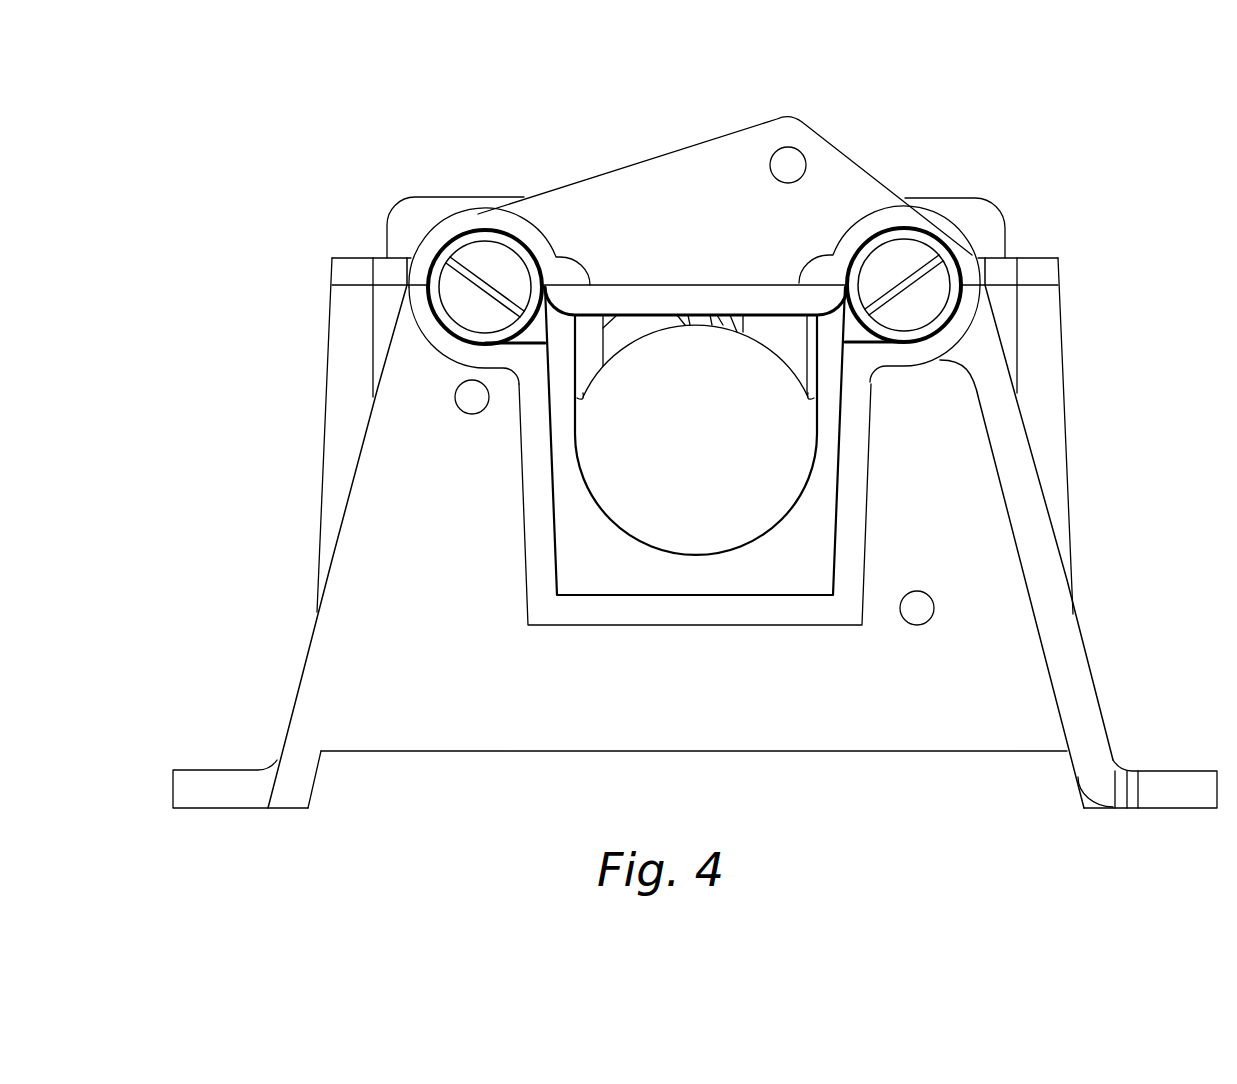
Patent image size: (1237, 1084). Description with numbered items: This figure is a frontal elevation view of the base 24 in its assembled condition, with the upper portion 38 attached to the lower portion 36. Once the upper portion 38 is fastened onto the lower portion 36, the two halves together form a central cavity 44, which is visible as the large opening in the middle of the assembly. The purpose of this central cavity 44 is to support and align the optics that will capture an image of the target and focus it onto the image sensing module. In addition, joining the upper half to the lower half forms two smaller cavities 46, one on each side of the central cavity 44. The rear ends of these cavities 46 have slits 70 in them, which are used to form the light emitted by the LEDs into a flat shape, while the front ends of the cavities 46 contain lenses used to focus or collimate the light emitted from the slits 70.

The base 24 is at (966, 140).
The lower portion 36 is at (1052, 391).
The upper portion 38 is at (986, 223).
The central cavity 44 is at (678, 512).
The cavities 46 is at (468, 311).
The slits 70 is at (483, 277).